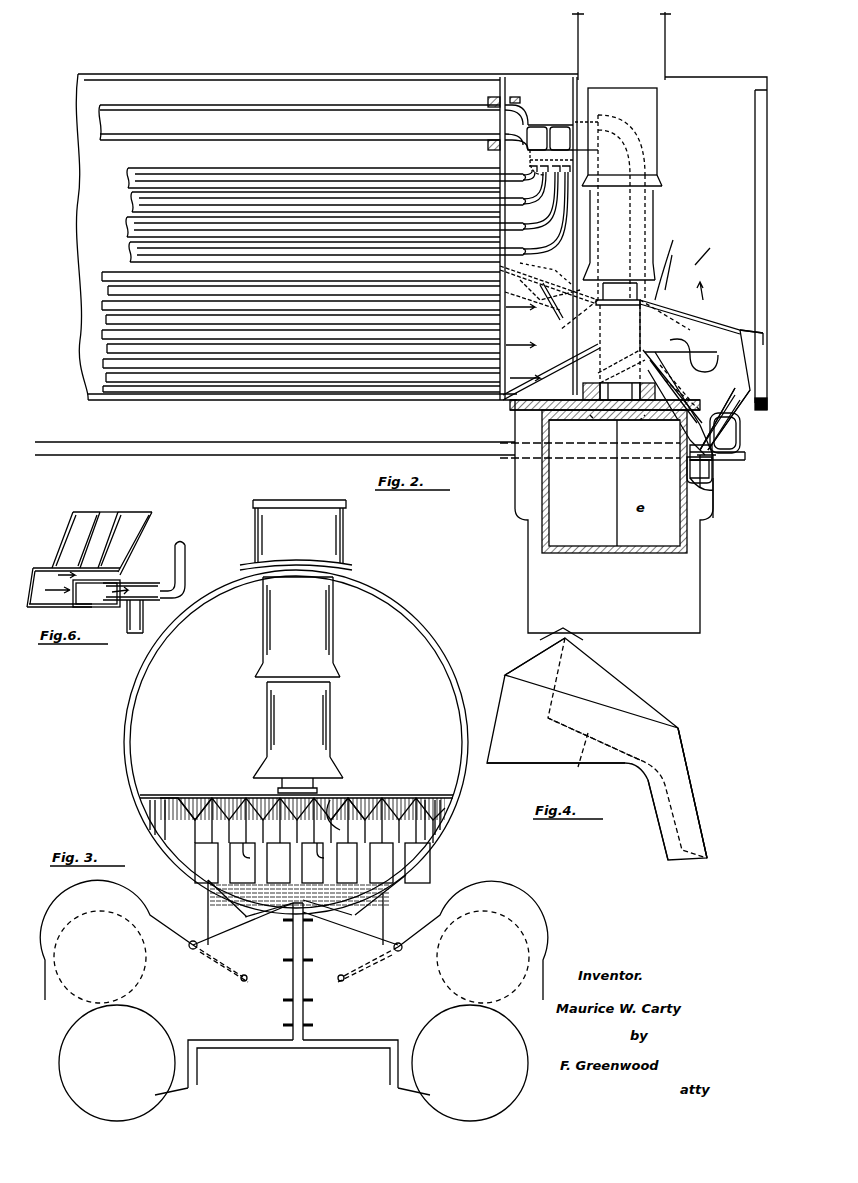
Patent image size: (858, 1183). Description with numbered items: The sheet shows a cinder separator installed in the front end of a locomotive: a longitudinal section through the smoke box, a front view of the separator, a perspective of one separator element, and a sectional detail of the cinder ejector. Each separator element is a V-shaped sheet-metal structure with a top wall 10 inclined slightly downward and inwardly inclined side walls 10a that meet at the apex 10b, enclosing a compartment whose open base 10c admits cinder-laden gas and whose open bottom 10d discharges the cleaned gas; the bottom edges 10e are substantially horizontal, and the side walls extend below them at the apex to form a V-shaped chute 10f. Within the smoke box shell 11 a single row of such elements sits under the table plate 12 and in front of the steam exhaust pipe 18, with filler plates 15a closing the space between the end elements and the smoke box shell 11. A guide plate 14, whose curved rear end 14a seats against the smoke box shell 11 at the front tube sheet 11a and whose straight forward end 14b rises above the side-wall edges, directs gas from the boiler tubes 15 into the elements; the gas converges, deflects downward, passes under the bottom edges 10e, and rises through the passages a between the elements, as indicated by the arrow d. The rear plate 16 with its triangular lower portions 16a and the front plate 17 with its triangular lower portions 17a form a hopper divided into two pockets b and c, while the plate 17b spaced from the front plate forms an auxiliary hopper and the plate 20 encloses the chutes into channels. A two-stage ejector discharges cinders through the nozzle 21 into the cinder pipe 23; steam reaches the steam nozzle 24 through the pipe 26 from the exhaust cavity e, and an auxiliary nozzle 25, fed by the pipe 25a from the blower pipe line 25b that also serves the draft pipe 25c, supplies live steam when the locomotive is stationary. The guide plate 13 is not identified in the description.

In FIG. 2, the top wall 10 is at (682, 302).
In FIG. 3, the top wall 10 is at (226, 800).
In FIG. 4, the top wall 10 is at (617, 692).
In FIG. 2, the side walls 10a is at (676, 300).
In FIG. 3, the side walls 10a is at (190, 820).
In FIG. 4, the side walls 10a is at (525, 752).
In FIG. 2, the apex 10b is at (745, 332).
In FIG. 3, the apex 10b is at (350, 815).
In FIG. 4, the apex 10b is at (683, 736).
In FIG. 2, the open end or base 10c is at (625, 341).
In FIG. 4, the open end or base 10c is at (498, 690).
In FIG. 2, the open bottom 10d is at (672, 386).
In FIG. 2, the bottom edges 10e is at (684, 387).
In FIG. 4, the bottom edges 10e is at (590, 763).
In FIG. 2, the V-shaped chute 10f is at (738, 385).
In FIG. 3, the V-shaped chute 10f is at (220, 865).
In FIG. 4, the V-shaped chute 10f is at (682, 805).
In FIG. 2, the smoke box shell 11 is at (728, 77).
In FIG. 3, the smoke box shell 11 is at (420, 612).
In FIG. 2, the front tube sheet 11a is at (500, 348).
In FIG. 2, the table plate 12 is at (672, 262).
In FIG. 2, the guide plate 13 is at (600, 327).
In FIG. 2, the guide plate 14 is at (596, 368).
In FIG. 2, the rear end of guide plate 14a is at (512, 380).
In FIG. 2, the forward end of guide plate 14b is at (640, 362).
In FIG. 2, the boiler tubes 15 is at (316, 358).
In FIG. 3, the filler plates 15a is at (150, 805).
In FIG. 2, the rear plate 16 is at (680, 394).
In FIG. 6, the rear plate 16 is at (68, 532).
In FIG. 2, the triangularly shaped lower portions of rear plate 16a is at (685, 440).
In FIG. 2, the front plate 17 is at (742, 422).
In FIG. 6, the front plate 17 is at (140, 528).
In FIG. 3, the front plate 17 is at (276, 893).
In FIG. 2, the triangularly shaped lower portions of front plate 17a is at (738, 440).
In FIG. 3, the triangularly shaped lower portions of front plate 17a is at (370, 912).
In FIG. 2, the auxiliary hopper plate 17b is at (748, 400).
In FIG. 6, the auxiliary hopper plate 17b is at (112, 516).
In FIG. 2, the steam exhaust pipe 18 is at (614, 292).
In FIG. 3, the steam exhaust pipe 18 is at (318, 778).
In FIG. 2, the plate 20 is at (712, 360).
In FIG. 2, the nozzle 21 is at (699, 470).
In FIG. 6, the nozzle 21 is at (103, 590).
In FIG. 2, the cinder pipe 23 is at (306, 452).
In FIG. 6, the cinder pipe 23 is at (40, 604).
In FIG. 2, the steam nozzle 24 is at (715, 462).
In FIG. 6, the steam nozzle 24 is at (132, 583).
In FIG. 2, the auxiliary nozzle 25 is at (740, 455).
In FIG. 6, the auxiliary nozzle 25 is at (198, 580).
In FIG. 2, the pipe 25a is at (588, 308).
In FIG. 2, the blower pipe line 25b is at (528, 268).
In FIG. 2, the draft pipe 25c is at (643, 218).
In FIG. 3, the draft pipe 25c is at (270, 718).
In FIG. 2, the pipe 26 is at (714, 492).
In FIG. 6, the pipe 26 is at (143, 614).
In FIG. 3, the pipe 26 is at (370, 970).
In FIG. 6, the gas passages a is at (172, 578).
In FIG. 3, the cinder pocket b is at (240, 912).
In FIG. 3, the cinder pocket c is at (350, 918).
In FIG. 2, the arrow d is at (708, 300).
In FIG. 2, the exhaust cavity e is at (614, 467).